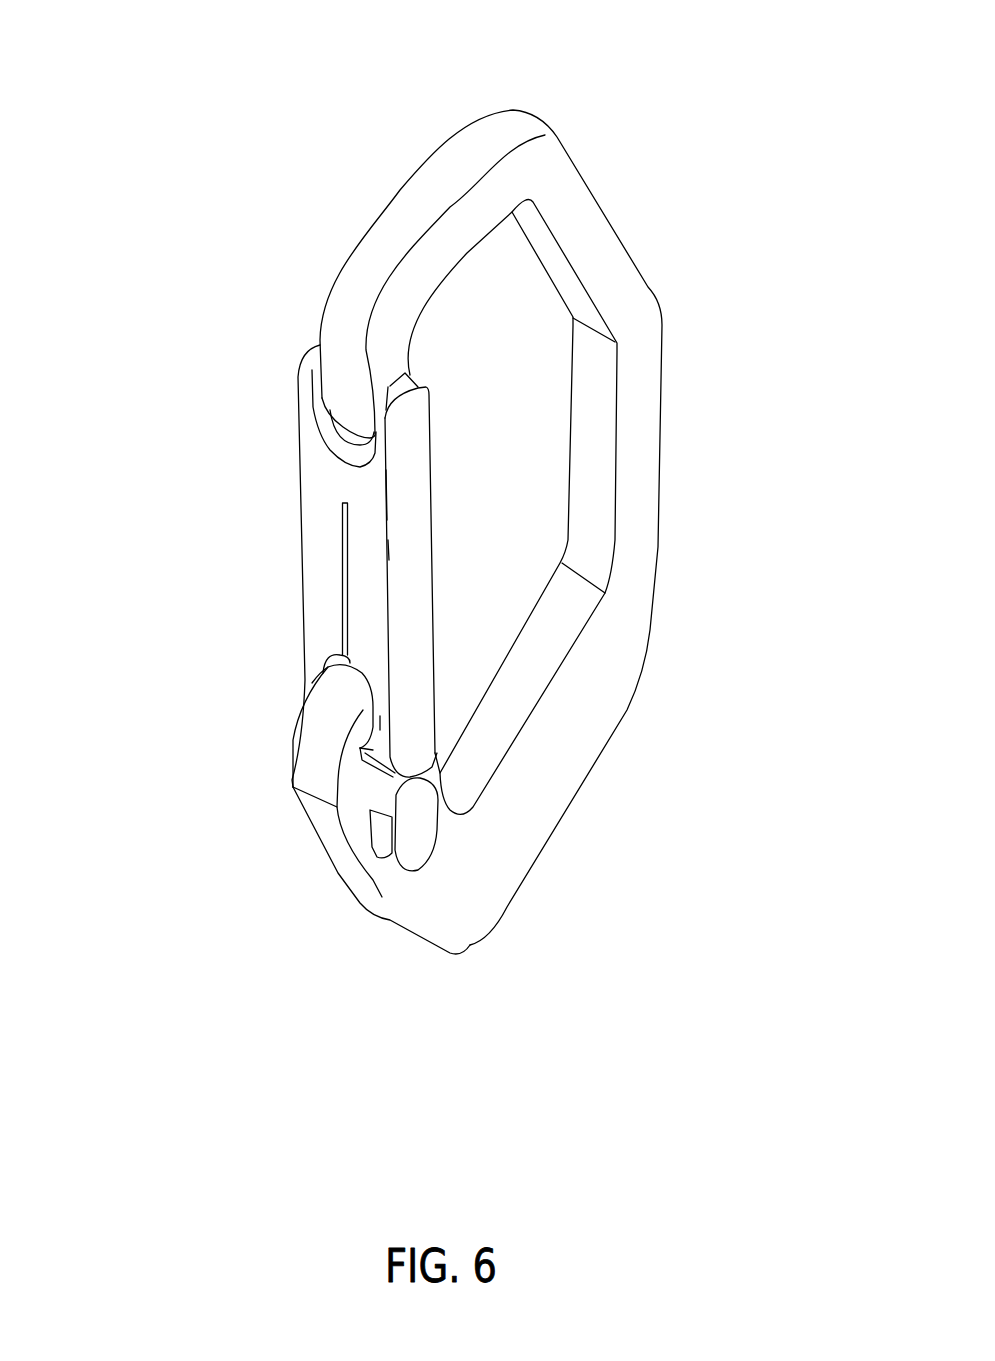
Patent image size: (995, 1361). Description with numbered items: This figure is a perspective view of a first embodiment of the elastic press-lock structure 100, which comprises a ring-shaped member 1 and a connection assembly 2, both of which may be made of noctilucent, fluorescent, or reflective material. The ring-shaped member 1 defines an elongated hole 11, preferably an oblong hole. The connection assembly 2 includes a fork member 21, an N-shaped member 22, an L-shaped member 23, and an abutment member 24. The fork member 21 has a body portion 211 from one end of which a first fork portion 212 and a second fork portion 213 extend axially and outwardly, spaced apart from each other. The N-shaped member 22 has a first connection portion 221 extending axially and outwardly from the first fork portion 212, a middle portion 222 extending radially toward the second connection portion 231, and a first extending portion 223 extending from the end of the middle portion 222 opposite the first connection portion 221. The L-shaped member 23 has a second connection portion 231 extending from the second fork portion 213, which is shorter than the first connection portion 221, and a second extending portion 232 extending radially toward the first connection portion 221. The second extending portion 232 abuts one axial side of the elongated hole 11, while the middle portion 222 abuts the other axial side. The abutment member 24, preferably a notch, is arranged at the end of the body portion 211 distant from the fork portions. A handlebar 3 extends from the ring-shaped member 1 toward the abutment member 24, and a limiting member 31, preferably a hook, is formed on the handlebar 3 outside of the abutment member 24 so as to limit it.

The elastic press-lock structure 100 is at (622, 137).
The ring-shaped member 1 is at (340, 873).
The elongated hole 11 is at (368, 773).
The connection assembly 2 is at (163, 483).
The fork member 21 is at (432, 403).
The body portion 211 is at (355, 487).
The first fork portion 212 is at (318, 556).
The second fork portion 213 is at (365, 548).
The N-shaped member 22 is at (310, 695).
The first connection portion 221 is at (312, 676).
The middle portion 222 is at (382, 785).
The first extending portion 223 is at (380, 847).
The L-shaped member 23 is at (440, 775).
The second connection portion 231 is at (380, 716).
The second extending portion 232 is at (360, 748).
The abutment member 24 is at (353, 432).
The handlebar 3 is at (662, 448).
The limiting member 31 is at (343, 397).